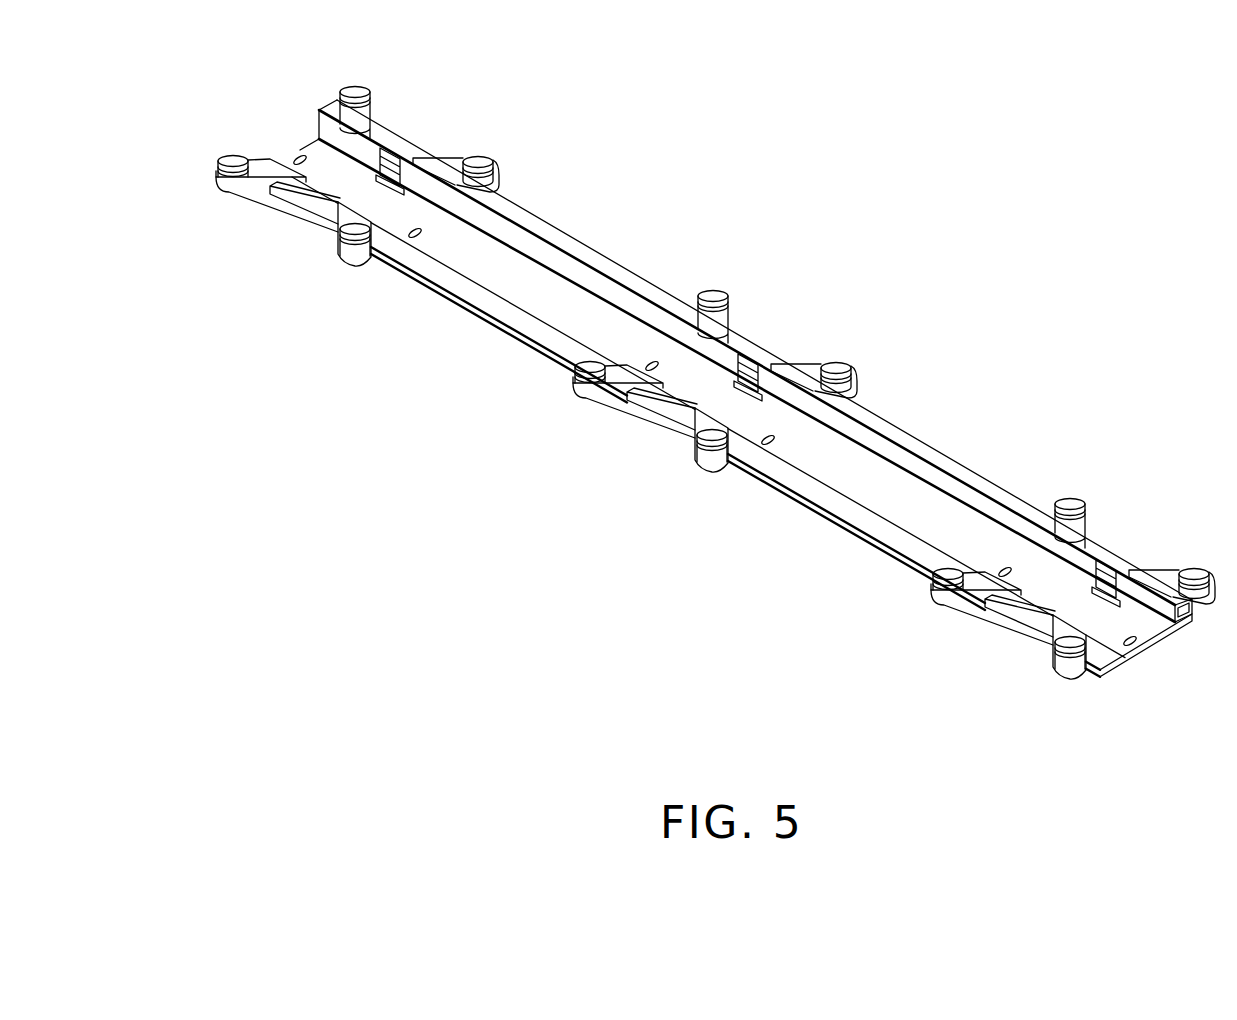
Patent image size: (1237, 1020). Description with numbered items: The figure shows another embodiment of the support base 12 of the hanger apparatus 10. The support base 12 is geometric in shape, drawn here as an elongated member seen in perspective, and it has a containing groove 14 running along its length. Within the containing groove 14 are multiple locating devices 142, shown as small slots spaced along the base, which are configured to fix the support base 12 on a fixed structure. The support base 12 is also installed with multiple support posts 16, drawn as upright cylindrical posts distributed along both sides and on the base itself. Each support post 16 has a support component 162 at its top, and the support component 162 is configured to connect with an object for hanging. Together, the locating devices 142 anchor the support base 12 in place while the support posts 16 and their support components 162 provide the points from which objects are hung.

The hanger apparatus 10 is at (494, 98).
The support base 12 is at (578, 258).
The containing groove 14 is at (1150, 620).
The locating device 142 is at (418, 240).
The support post 16 is at (262, 165).
The support component 162 is at (491, 160).